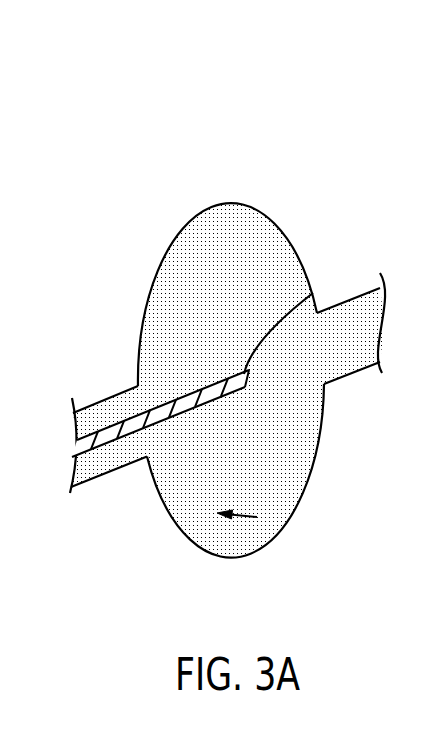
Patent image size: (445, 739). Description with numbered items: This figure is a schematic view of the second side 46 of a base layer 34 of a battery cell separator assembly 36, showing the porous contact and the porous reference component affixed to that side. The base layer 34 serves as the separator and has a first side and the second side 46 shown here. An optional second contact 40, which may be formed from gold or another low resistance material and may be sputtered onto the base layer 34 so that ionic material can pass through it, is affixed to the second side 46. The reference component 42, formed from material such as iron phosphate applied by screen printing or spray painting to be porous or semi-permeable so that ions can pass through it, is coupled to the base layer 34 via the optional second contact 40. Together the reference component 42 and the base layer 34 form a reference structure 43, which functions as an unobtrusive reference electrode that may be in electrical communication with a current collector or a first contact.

The base layer 34 is at (302, 456).
The battery cell separator assembly 36 is at (312, 172).
The second contact 40 is at (145, 428).
The reference component 42 is at (313, 293).
The reference structure 43 is at (236, 285).
The second side 46 is at (237, 517).